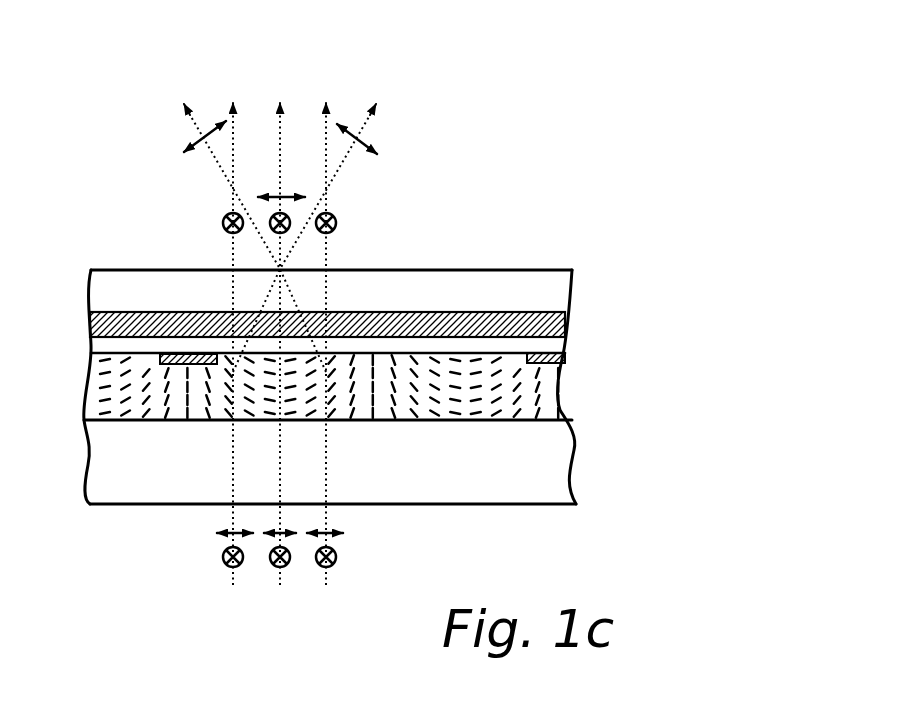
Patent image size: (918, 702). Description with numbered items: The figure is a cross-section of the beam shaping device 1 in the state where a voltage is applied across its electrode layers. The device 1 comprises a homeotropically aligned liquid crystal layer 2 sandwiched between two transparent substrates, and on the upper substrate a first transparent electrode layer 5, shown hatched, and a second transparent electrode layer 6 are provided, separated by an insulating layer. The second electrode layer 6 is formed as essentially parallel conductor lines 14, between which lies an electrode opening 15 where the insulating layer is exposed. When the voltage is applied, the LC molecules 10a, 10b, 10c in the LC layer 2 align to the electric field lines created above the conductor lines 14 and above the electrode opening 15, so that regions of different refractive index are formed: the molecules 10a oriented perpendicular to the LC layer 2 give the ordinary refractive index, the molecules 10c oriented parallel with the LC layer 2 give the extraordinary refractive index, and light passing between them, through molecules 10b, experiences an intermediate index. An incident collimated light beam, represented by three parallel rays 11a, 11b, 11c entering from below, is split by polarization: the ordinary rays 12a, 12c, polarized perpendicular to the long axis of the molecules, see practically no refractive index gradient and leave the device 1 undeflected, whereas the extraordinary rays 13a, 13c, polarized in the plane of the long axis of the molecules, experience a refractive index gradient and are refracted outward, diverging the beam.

The beam shaping device 1 is at (548, 263).
The liquid crystal layer 2 is at (550, 387).
The first transparent electrode layer 5 is at (127, 313).
The second transparent electrode layer 6 is at (173, 353).
The conductor lines 14 is at (552, 352).
The electrode opening 15 is at (452, 362).
The LC molecules oriented perpendicular to the LC layer 10a is at (205, 383).
The LC molecules 10b is at (228, 383).
The LC molecules oriented parallel with the LC layer 10c is at (288, 377).
The ray of light 11a is at (235, 512).
The ray of light 11b is at (280, 512).
The ray of light 11c is at (327, 513).
The ordinary ray 12a is at (233, 197).
The ordinary ray 12c is at (327, 197).
The extraordinary ray 13a is at (362, 127).
The extraordinary ray 13c is at (187, 120).